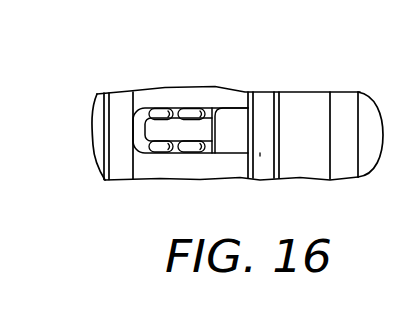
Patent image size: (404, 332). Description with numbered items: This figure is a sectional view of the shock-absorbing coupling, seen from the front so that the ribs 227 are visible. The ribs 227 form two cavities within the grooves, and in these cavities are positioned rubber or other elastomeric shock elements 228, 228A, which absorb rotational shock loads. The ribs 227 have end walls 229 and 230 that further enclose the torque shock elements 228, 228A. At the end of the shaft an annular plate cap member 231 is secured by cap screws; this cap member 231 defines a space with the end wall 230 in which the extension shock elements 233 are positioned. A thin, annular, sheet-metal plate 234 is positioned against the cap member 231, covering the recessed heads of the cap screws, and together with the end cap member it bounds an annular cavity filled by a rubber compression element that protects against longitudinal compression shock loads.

The ribs 227 is at (146, 143).
The shock element 228 is at (174, 130).
The shock element 228A is at (197, 152).
The end wall 229 is at (146, 108).
The end wall 230 is at (203, 118).
The annular plate cap member 231 is at (260, 156).
The extension shock elements 233 is at (238, 110).
The annular sheet-metal plate 234 is at (280, 106).